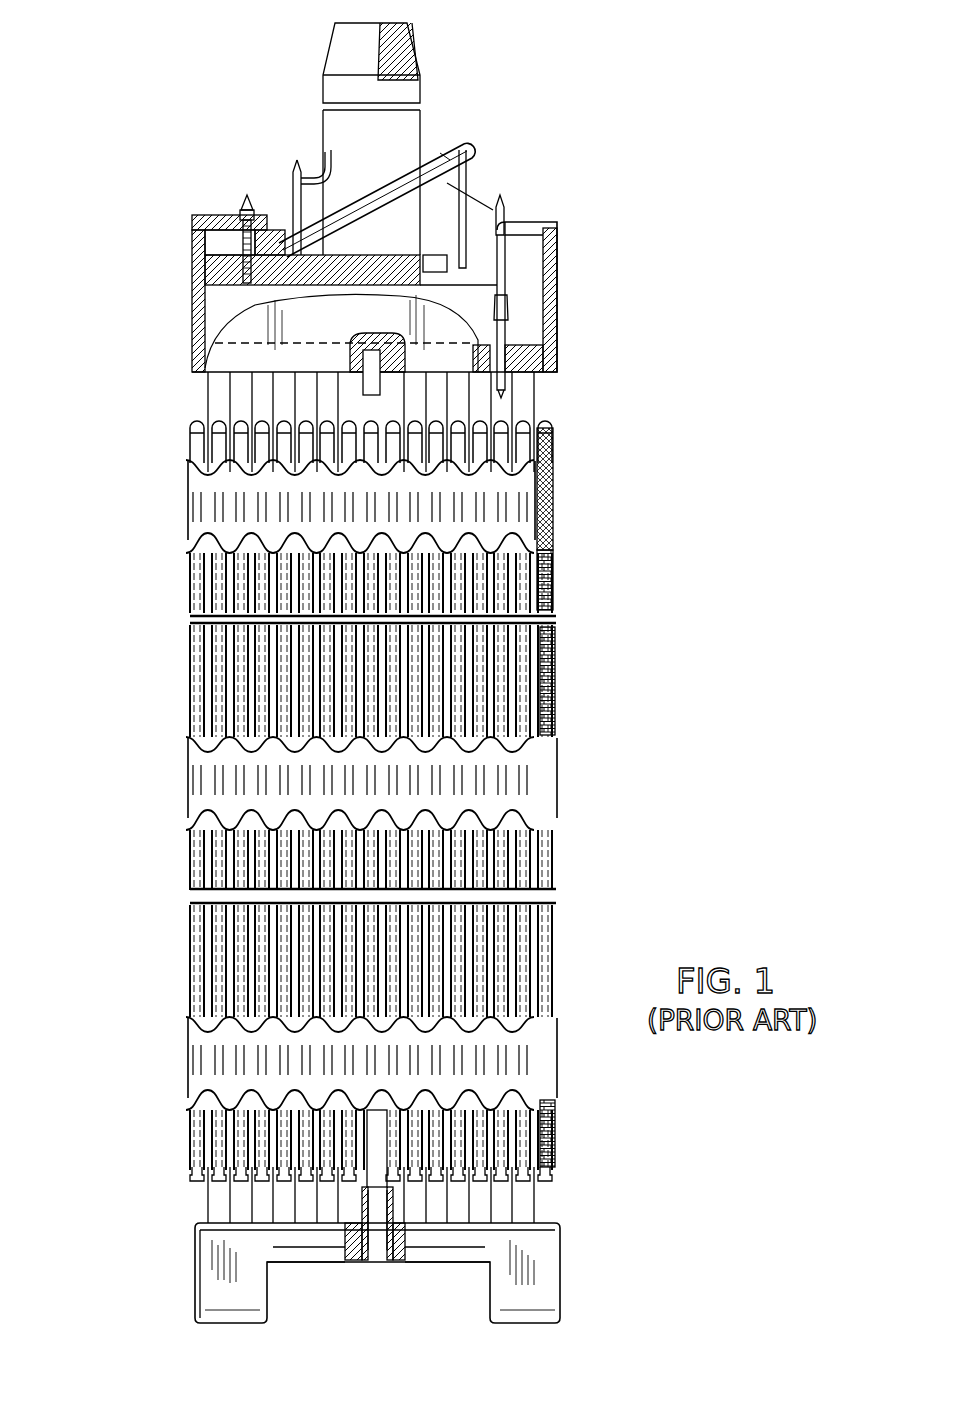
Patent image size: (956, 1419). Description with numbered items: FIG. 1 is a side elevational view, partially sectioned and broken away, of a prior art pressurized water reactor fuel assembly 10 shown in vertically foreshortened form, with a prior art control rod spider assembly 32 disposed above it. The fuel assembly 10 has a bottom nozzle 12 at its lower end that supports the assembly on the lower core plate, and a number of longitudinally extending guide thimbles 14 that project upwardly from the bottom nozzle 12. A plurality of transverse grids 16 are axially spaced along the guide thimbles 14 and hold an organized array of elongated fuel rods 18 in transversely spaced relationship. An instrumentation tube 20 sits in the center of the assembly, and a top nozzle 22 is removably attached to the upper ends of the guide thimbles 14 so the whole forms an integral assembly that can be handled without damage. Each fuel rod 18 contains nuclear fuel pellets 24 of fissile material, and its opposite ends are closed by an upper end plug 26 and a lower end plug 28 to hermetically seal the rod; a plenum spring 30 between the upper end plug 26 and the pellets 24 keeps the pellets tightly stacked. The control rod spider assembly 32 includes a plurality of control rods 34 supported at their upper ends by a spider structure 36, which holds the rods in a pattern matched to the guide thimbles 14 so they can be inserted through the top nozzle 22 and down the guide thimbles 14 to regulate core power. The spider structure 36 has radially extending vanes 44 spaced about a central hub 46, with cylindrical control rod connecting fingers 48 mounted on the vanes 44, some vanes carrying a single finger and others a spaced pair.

The fuel assembly 10 is at (656, 88).
The bottom nozzle 12 is at (560, 1280).
The guide thimbles 14 is at (232, 391).
The transverse grids 16 is at (190, 497).
The fuel rods 18 is at (193, 665).
The instrumentation tube 20 is at (385, 1245).
The top nozzle 22 is at (557, 277).
The nuclear fuel pellets 24 is at (550, 633).
The upper end plug 26 is at (197, 425).
The lower end plug 28 is at (200, 1178).
The plenum spring 30 is at (555, 500).
The control rod spider assembly 32 is at (489, 126).
The control rods 34 is at (500, 320).
The spider structure 36 is at (478, 177).
The vanes 44 is at (292, 200).
The central hub 46 is at (330, 152).
The control rod connecting fingers 48 is at (240, 215).